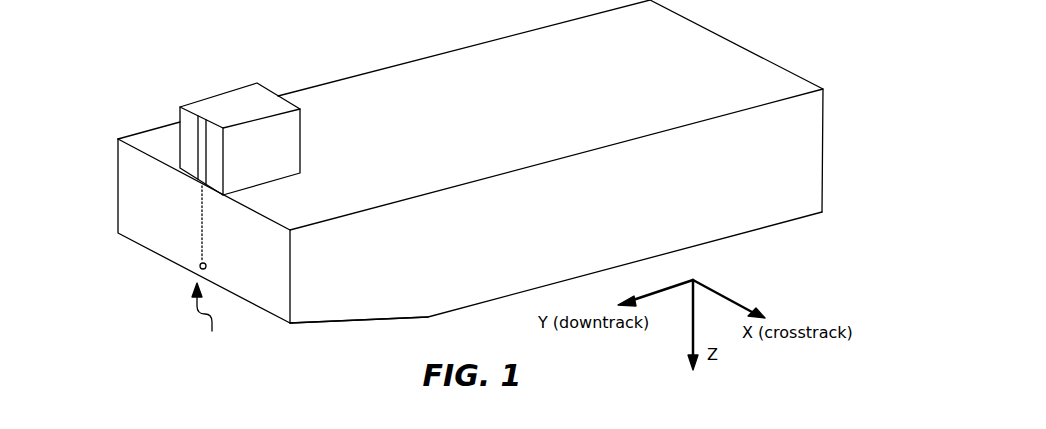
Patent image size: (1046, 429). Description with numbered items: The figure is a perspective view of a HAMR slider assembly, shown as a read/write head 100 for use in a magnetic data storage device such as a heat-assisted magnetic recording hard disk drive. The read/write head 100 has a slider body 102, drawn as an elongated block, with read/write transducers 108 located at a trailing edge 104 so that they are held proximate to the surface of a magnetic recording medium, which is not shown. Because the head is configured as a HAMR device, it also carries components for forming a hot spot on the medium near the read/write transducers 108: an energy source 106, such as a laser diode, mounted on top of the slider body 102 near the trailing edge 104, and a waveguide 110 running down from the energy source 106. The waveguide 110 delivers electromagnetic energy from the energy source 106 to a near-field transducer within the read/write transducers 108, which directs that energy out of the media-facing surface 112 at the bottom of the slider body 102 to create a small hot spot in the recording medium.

The read/write head 100 is at (456, 193).
The slider body 102 is at (418, 70).
The trailing edge 104 is at (117, 209).
The energy source 106 is at (203, 98).
The read/write transducers 108 is at (210, 320).
The waveguide 110 is at (200, 222).
The media-facing surface 112 is at (278, 324).